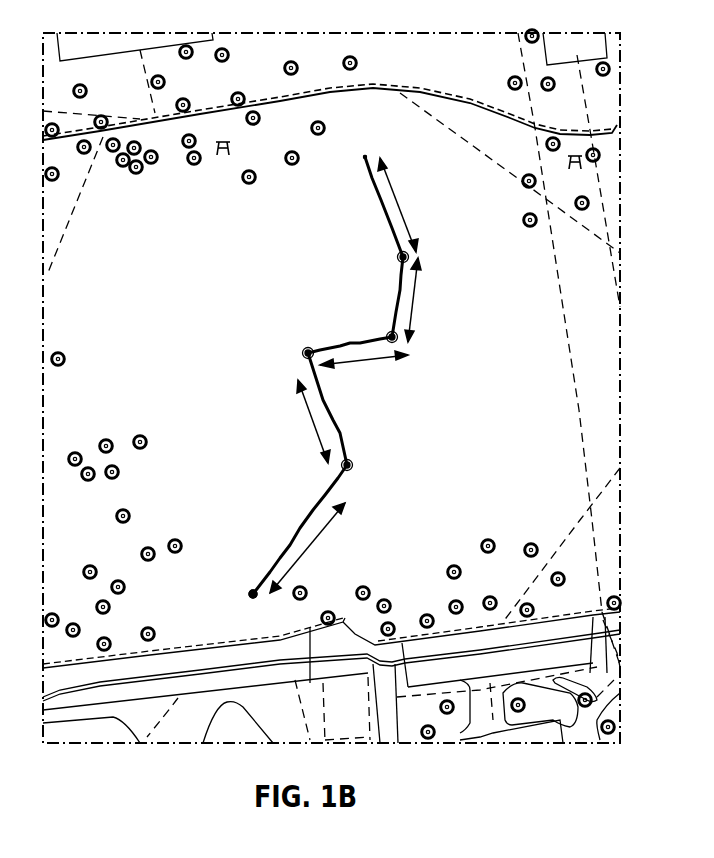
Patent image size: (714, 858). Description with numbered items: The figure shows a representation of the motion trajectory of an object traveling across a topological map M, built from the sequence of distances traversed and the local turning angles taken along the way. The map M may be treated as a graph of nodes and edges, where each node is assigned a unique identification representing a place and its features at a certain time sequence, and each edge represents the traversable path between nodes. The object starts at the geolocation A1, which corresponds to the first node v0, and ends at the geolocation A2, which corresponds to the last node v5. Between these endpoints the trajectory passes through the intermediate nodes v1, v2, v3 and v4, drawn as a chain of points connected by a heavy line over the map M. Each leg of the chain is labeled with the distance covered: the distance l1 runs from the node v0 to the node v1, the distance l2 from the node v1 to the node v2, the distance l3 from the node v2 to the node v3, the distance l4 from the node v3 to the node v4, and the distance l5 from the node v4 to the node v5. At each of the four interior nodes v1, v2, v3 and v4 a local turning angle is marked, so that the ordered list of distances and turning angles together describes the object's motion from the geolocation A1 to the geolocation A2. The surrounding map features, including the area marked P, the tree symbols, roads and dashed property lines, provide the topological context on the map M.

The topological map M is at (167, 322).
The parking lot P is at (540, 698).
The geolocation A1 is at (349, 140).
The geolocation A2 is at (233, 592).
The node v0 is at (351, 175).
The node v1 is at (431, 258).
The node v2 is at (411, 353).
The node v3 is at (293, 333).
The node v4 is at (362, 466).
The node v5 is at (253, 613).
The distance l1 is at (400, 205).
The distance l2 is at (426, 300).
The distance l3 is at (364, 381).
The distance l4 is at (303, 421).
The distance l5 is at (307, 548).